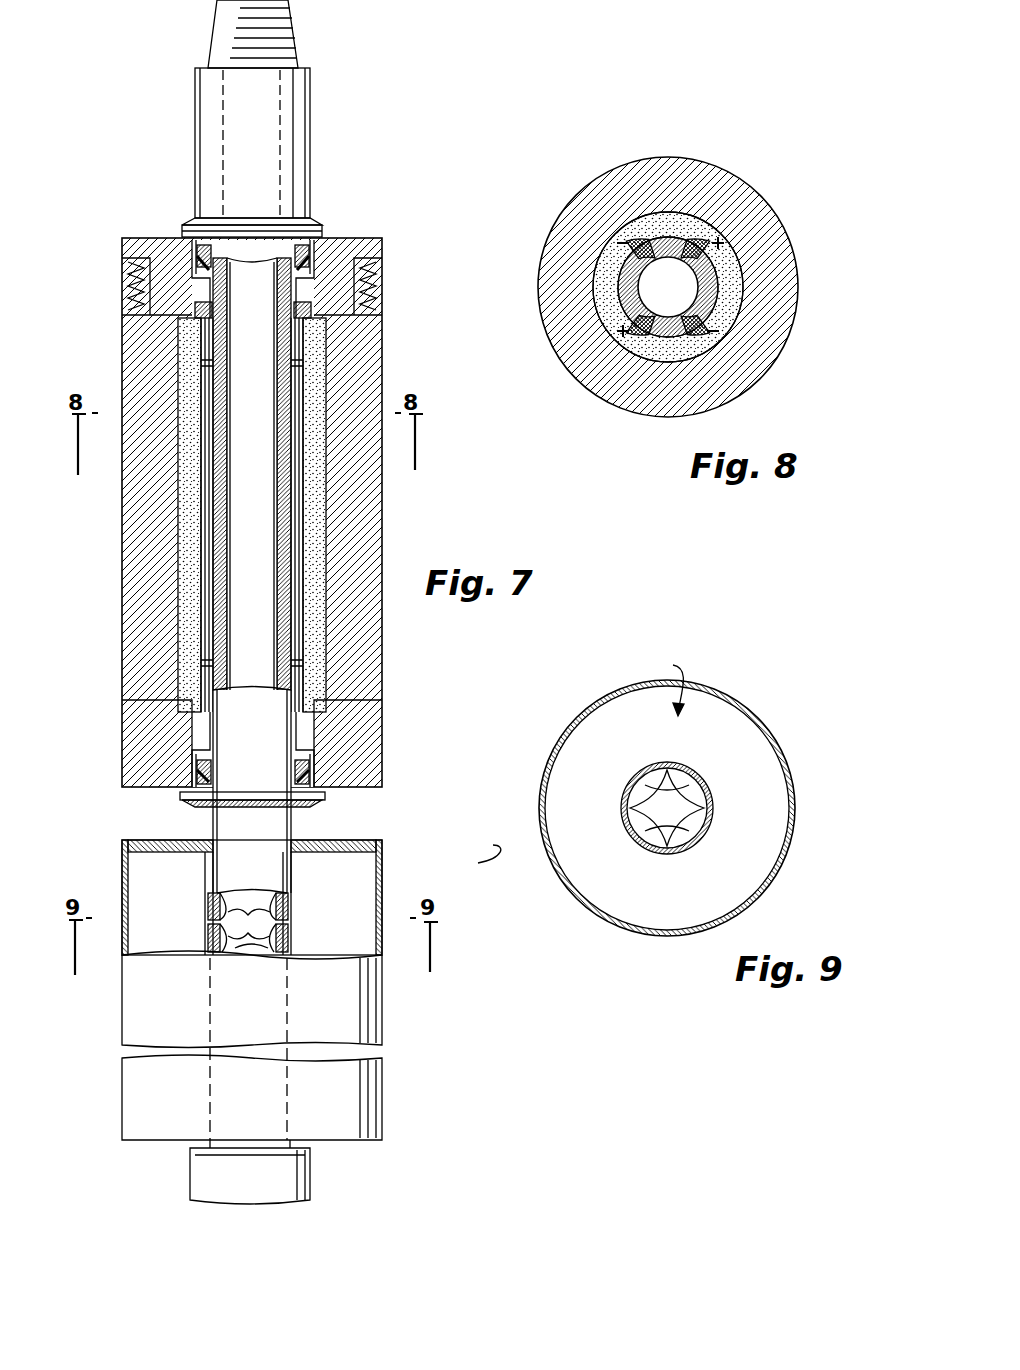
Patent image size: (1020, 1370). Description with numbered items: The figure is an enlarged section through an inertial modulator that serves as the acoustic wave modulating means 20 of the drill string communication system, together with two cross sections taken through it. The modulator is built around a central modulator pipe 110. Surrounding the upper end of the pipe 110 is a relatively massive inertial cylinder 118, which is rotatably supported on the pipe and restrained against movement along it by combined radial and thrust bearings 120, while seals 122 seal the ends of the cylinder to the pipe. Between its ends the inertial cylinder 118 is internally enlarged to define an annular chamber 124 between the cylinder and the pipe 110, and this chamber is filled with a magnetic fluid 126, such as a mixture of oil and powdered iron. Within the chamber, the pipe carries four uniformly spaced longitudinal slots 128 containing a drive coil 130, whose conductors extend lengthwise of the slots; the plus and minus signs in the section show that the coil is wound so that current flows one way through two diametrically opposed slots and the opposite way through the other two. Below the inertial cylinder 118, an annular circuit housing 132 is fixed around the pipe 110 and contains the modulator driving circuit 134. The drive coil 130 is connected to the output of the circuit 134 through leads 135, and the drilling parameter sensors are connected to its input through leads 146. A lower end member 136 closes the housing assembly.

In FIG. 7, the acoustic wave modulating means 20 is at (70, 691).
In FIG. 7, the modulator pipe 110 is at (275, 732).
In FIG. 7, the inertial cylinder 118 is at (383, 512).
In FIG. 7, the combined radial and thrust bearings 120 is at (315, 258).
In FIG. 7, the seals 122 is at (125, 321).
In FIG. 7, the annular chamber 124 is at (318, 642).
In FIG. 7, the magnetic fluid 126 is at (190, 580).
In FIG. 8, the longitudinal slots 128 is at (708, 250).
In FIG. 7, the drive coil 130 is at (205, 523).
In FIG. 8, the drive coil 130 is at (728, 325).
In FIG. 7, the annular circuit housing 132 is at (383, 1022).
In FIG. 9, the annular circuit housing 132 is at (797, 820).
In FIG. 7, the modulator driving circuit 134 is at (357, 888).
In FIG. 9, the modulator driving circuit 134 is at (713, 718).
In FIG. 7, the leads 135 is at (248, 922).
In FIG. 9, the leads 135 is at (648, 790).
In FIG. 7, the end cap 136 is at (192, 1186).
In FIG. 7, the leads 146 is at (255, 957).
In FIG. 9, the leads 146 is at (670, 832).